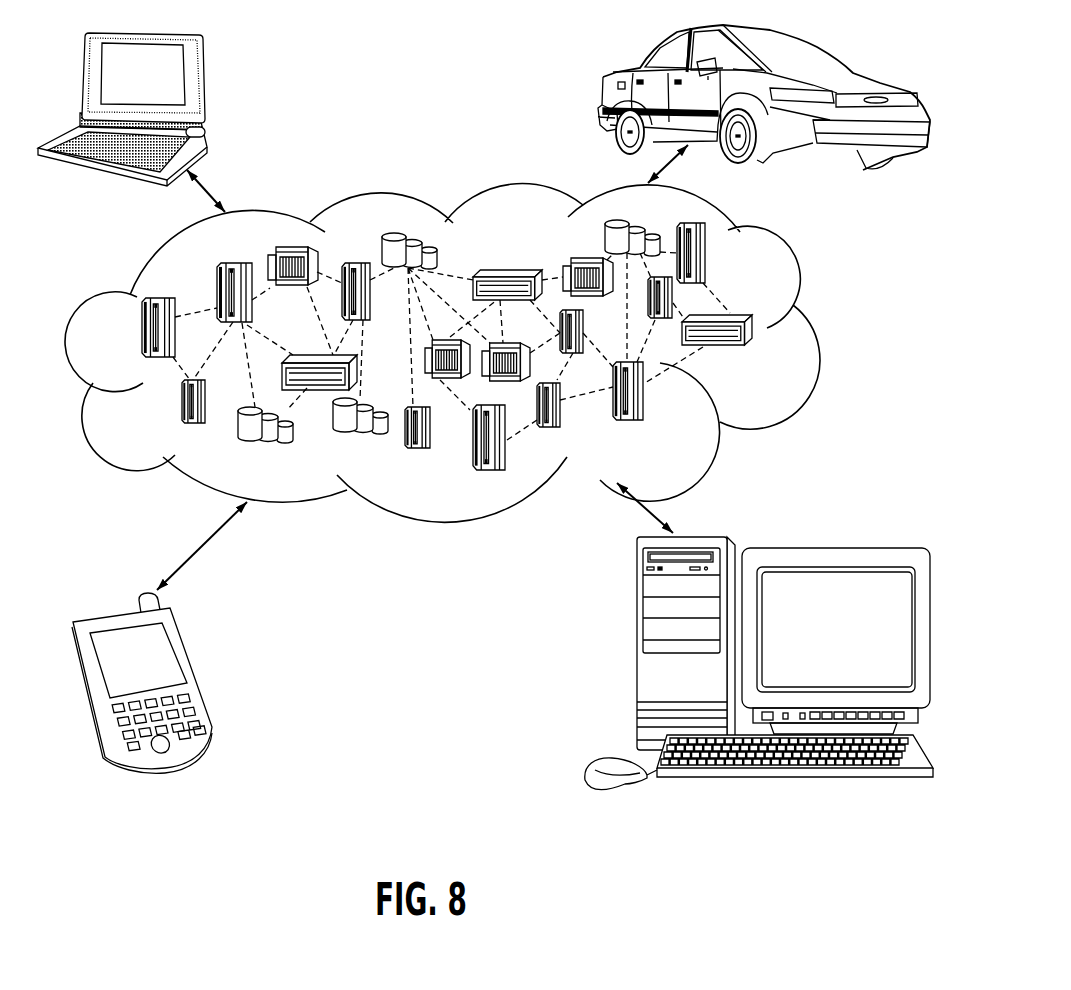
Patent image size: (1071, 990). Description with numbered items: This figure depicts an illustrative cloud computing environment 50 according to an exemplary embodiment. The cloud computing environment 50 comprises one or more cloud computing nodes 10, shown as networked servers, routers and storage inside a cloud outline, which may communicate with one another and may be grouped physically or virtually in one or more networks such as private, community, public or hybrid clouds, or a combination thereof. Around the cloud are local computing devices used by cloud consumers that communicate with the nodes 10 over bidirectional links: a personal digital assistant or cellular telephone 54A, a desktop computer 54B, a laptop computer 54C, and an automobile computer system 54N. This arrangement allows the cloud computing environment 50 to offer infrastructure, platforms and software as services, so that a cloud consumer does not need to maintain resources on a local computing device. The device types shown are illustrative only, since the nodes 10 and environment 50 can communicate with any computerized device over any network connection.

The cloud computing node 10 is at (772, 350).
The cloud computing environment 50 is at (797, 288).
The personal digital assistant or cellular telephone 54A is at (193, 670).
The desktop computer 54B is at (635, 652).
The laptop computer 54C is at (203, 80).
The automobile computer system 54N is at (610, 85).